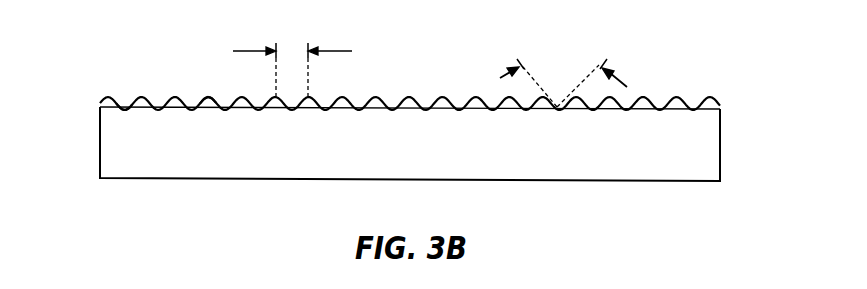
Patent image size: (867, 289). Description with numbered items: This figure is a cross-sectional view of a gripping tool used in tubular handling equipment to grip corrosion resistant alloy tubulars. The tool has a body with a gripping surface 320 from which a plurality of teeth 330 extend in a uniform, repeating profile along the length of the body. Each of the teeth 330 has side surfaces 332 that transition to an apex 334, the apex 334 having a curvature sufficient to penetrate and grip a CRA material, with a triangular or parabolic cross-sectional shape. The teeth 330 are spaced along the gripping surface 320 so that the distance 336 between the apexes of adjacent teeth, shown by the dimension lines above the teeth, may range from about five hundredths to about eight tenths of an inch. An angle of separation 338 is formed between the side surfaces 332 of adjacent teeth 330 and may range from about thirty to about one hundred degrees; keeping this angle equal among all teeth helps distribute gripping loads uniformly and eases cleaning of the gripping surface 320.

The gripping surface 320 is at (690, 106).
The teeth 330 is at (376, 97).
The side surfaces 332 is at (132, 103).
The apex 334 is at (210, 95).
The distance between apexes of adjacent teeth 336 is at (250, 50).
The angle of separation 338 is at (626, 83).